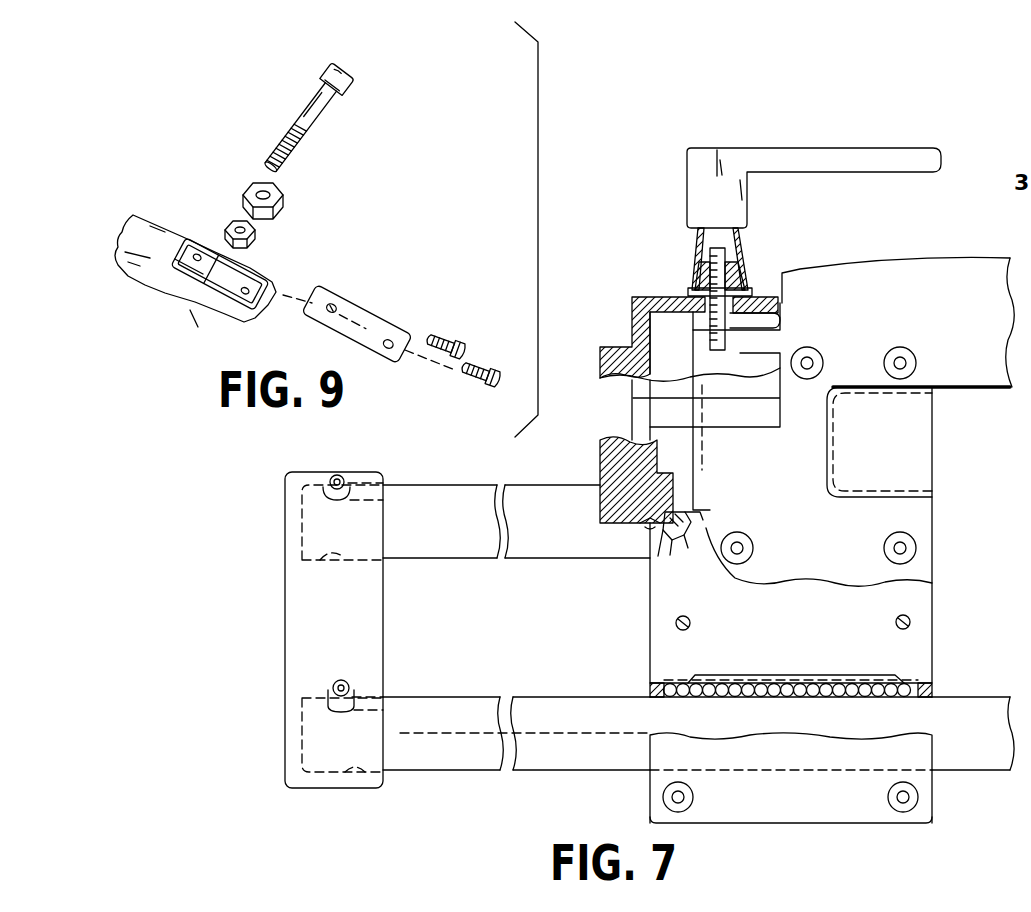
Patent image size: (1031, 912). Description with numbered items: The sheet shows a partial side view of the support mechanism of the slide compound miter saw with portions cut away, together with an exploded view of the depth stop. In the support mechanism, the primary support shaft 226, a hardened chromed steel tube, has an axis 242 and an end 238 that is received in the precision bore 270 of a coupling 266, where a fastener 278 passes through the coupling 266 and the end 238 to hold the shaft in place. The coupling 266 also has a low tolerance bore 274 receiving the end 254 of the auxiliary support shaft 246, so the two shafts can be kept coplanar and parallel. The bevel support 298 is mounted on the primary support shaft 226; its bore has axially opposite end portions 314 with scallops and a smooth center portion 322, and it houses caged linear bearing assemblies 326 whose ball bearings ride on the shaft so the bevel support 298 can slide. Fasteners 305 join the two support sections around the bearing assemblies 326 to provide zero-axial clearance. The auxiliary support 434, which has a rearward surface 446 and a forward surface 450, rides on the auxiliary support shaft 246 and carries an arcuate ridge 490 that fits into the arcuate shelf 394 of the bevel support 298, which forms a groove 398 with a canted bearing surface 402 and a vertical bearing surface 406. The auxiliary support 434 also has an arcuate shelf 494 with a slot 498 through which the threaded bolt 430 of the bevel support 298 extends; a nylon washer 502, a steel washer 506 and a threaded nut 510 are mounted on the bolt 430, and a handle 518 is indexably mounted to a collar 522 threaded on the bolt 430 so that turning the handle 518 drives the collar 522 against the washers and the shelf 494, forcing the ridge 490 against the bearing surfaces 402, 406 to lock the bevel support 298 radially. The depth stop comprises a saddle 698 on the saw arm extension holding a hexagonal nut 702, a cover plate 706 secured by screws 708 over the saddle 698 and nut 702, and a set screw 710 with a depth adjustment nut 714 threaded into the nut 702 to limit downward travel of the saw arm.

In FIG. 9, the set screw 710 is at (326, 128).
In FIG. 9, the depth adjustment nut 714 is at (282, 195).
In FIG. 9, the hexagonal nut 702 is at (257, 239).
In FIG. 9, the saddle 698 is at (233, 268).
In FIG. 9, the cover plate 706 is at (368, 311).
In FIG. 9, the screws 708 is at (476, 370).
In FIG. 7, the handle 518 is at (787, 147).
In FIG. 7, the collar 522 is at (742, 252).
In FIG. 7, the steel washer 506 is at (697, 288).
In FIG. 7, the nylon washer 502 is at (689, 292).
In FIG. 7, the threaded nut 510 is at (703, 273).
In FIG. 7, the auxiliary support 434 is at (607, 343).
In FIG. 7, the rearward surface 446 is at (602, 373).
In FIG. 7, the slot 498 is at (781, 311).
In FIG. 7, the arcuate shelf 494 is at (767, 297).
In FIG. 7, the threaded bolt 430 is at (727, 350).
In FIG. 7, the forward surface 450 is at (665, 343).
In FIG. 7, the bevel support 298 is at (937, 657).
In FIG. 7, the fasteners 305 is at (918, 797).
In FIG. 7, the slot or groove 398 is at (680, 505).
In FIG. 7, the arcuate ridge 490 is at (680, 527).
In FIG. 7, the arcuate shelf 394 is at (650, 517).
In FIG. 7, the canted bearing surface 402 is at (673, 535).
In FIG. 7, the vertical bearing surface 406 is at (660, 535).
In FIG. 7, the end portions 314 is at (930, 687).
In FIG. 7, the linear bearing assemblies 326 is at (937, 702).
In FIG. 7, the center portion 322 is at (772, 678).
In FIG. 7, the primary support shaft 226 is at (571, 773).
In FIG. 7, the axis 242 is at (533, 733).
In FIG. 7, the auxiliary support shaft 246 is at (427, 485).
In FIG. 7, the coupling 266 is at (383, 630).
In FIG. 7, the end 254 is at (302, 562).
In FIG. 7, the low tolerance bore 274 is at (351, 539).
In FIG. 7, the fastener 278 is at (332, 680).
In FIG. 7, the end 238 is at (288, 787).
In FIG. 7, the precision bore 270 is at (362, 787).